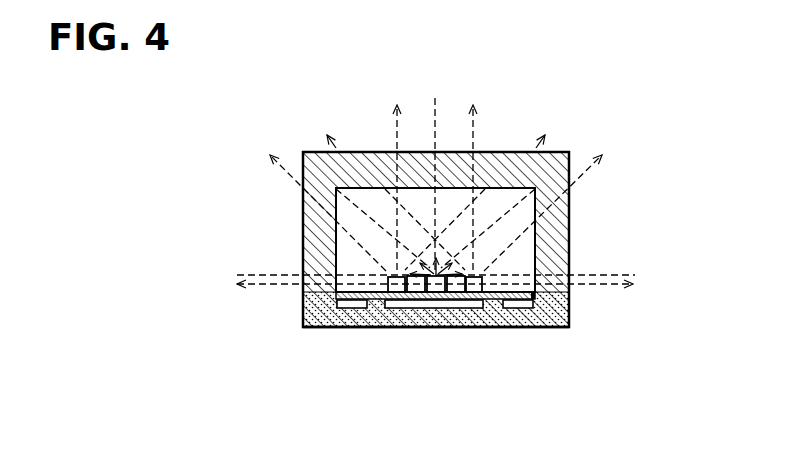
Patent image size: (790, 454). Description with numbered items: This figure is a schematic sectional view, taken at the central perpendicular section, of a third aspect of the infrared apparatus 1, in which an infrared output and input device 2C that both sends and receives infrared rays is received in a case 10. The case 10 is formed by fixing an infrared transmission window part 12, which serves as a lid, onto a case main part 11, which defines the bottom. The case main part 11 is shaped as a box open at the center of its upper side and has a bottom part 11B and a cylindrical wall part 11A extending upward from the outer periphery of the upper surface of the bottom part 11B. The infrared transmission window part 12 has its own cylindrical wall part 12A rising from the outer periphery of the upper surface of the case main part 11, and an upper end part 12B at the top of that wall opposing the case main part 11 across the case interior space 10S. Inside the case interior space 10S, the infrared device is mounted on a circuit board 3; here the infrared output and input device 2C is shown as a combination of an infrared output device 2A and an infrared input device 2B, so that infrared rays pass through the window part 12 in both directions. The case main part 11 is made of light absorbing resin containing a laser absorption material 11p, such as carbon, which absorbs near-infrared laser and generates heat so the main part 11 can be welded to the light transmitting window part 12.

The infrared apparatus 1 is at (290, 122).
The case 10 is at (562, 150).
The case interior space 10S is at (498, 200).
The case main part 11 is at (310, 327).
The cylindrical wall part 11A is at (312, 296).
The bottom part 11B is at (352, 327).
The laser absorption material 11p is at (567, 328).
The infrared transmission window part 12 is at (318, 210).
The cylindrical wall part 12A is at (317, 245).
The upper end part 12B is at (377, 163).
The infrared output device 2A is at (393, 312).
The infrared input device 2B is at (430, 312).
The infrared output and input device 2C is at (495, 389).
The circuit board 3 is at (520, 328).